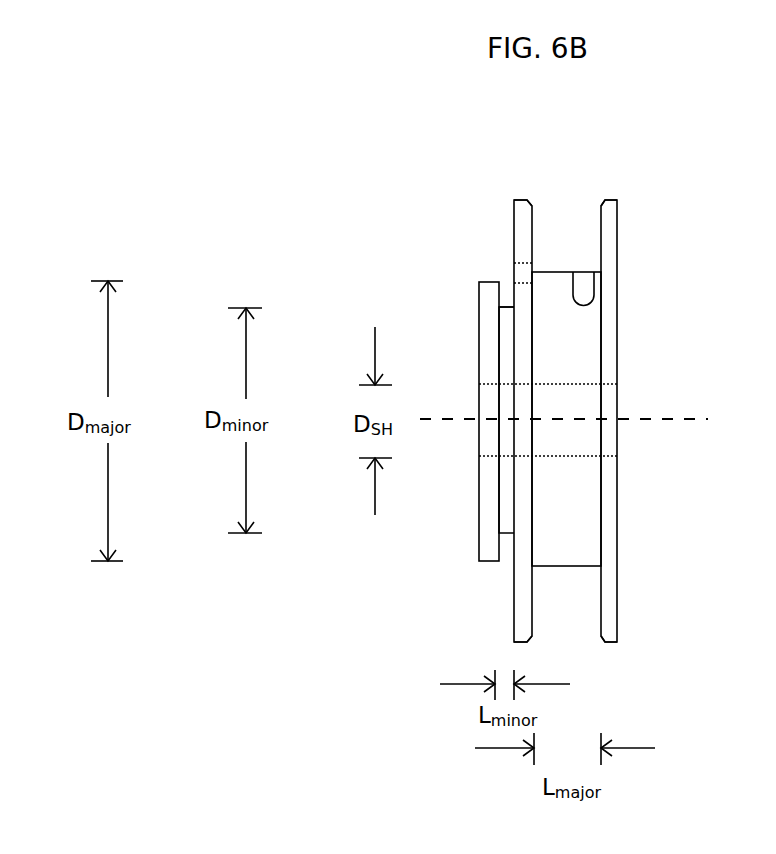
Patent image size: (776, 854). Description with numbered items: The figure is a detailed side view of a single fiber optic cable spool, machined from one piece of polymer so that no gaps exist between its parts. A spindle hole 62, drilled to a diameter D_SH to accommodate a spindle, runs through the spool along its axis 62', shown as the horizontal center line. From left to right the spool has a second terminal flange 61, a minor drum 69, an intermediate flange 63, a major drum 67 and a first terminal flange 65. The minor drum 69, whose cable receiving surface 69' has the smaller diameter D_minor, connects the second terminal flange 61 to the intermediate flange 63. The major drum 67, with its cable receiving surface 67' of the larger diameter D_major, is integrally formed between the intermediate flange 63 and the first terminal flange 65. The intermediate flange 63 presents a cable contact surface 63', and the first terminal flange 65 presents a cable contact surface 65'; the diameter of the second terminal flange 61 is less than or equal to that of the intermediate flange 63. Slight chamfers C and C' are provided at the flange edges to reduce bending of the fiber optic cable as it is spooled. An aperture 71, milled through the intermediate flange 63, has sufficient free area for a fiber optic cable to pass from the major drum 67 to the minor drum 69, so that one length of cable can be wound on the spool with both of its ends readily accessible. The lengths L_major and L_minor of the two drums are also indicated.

The second terminal flange 61 is at (487, 283).
The spindle hole 62 is at (599, 392).
The axis 62' is at (592, 398).
The intermediate flange 63 is at (496, 401).
The cable contact surface 63' is at (552, 649).
The first terminal flange 65 is at (632, 421).
The cable contact surface 65' is at (631, 672).
The major drum 67 is at (566, 448).
The cable receiving surface 67' is at (601, 215).
The minor drum 69 is at (444, 439).
The cable receiving surface 69' is at (448, 237).
The aperture 71 is at (518, 273).
The chamfer C is at (518, 178).
The chamfer C' is at (630, 180).